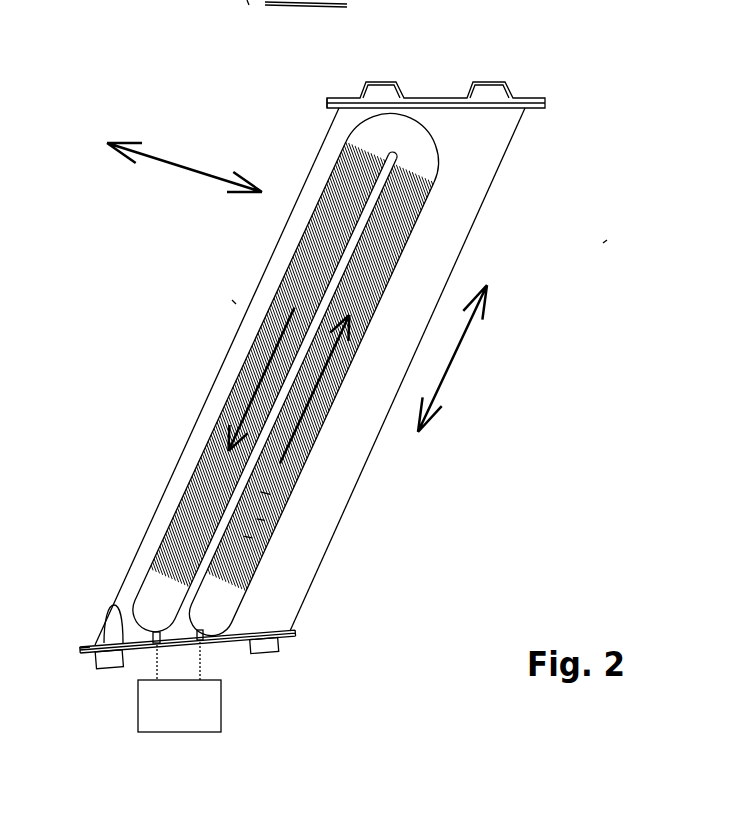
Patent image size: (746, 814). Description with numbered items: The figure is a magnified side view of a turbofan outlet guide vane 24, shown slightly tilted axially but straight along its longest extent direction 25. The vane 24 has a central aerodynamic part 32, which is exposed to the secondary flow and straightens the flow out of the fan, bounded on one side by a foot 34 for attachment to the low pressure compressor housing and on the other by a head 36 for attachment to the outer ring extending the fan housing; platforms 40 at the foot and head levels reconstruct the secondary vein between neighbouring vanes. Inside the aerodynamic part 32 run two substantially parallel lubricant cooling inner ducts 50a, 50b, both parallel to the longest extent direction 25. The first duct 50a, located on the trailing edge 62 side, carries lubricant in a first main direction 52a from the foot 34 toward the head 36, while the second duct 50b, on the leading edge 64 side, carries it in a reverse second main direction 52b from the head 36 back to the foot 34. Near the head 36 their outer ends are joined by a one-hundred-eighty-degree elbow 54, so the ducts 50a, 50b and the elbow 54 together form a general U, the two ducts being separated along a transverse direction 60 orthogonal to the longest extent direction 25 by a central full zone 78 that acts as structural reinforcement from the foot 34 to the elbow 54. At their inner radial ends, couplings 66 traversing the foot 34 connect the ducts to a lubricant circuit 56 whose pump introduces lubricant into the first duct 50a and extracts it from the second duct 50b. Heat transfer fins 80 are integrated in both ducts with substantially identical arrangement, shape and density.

The outlet guide vane 24 is at (607, 240).
The longest extent direction 25 is at (455, 352).
The aerodynamic part 32 is at (232, 300).
The foot 34 is at (268, 647).
The head 36 is at (488, 100).
The platforms 40 is at (330, 110).
The first lubricant cooling inner duct 50a is at (262, 572).
The second lubricant cooling inner duct 50b is at (170, 530).
The first main direction 52a is at (300, 443).
The second main direction 52b is at (263, 380).
The elbow 54 is at (418, 146).
The lubricant circuit 56 is at (203, 717).
The transverse direction 60 is at (183, 170).
The trailing edge 62 is at (487, 197).
The leading edge 64 is at (195, 425).
The couplings 66 is at (130, 648).
The central full zone 78 is at (360, 230).
The fins 80 is at (265, 493).